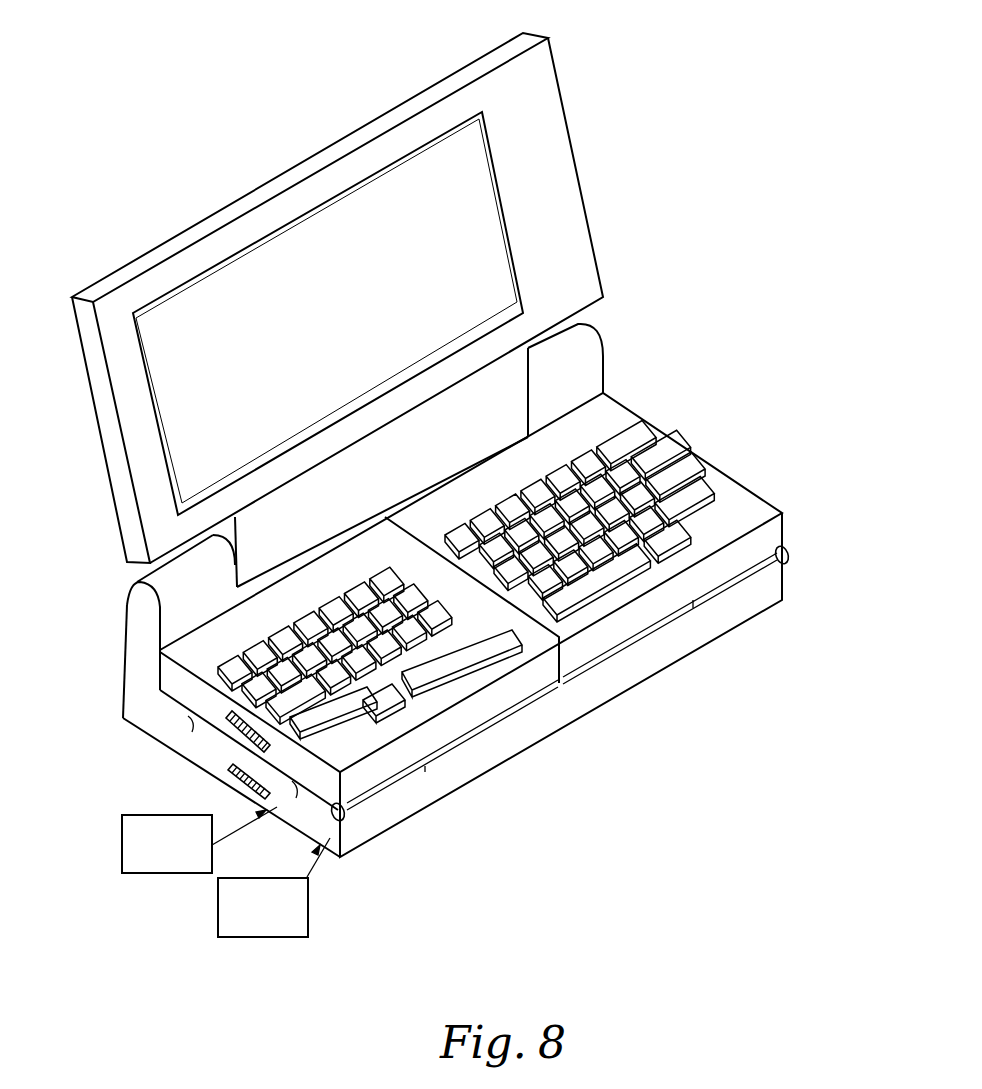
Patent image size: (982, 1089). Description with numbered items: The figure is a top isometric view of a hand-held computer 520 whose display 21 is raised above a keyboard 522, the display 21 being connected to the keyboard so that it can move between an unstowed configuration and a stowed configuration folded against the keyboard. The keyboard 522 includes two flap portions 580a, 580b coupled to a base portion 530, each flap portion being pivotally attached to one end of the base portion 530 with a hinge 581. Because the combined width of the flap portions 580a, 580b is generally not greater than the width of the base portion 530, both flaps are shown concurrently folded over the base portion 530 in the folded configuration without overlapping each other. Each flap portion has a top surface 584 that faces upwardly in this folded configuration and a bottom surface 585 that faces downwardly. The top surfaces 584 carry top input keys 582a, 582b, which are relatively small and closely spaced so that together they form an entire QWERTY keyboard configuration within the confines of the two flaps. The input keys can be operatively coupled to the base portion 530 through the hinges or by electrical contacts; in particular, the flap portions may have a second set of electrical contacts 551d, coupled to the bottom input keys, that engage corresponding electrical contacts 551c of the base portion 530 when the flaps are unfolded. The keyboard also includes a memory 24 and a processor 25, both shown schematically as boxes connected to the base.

The display 21 is at (563, 100).
The hand-held computer 520 is at (696, 285).
The keyboard 522 is at (815, 430).
The top input keys 582a is at (650, 426).
The top input keys 582b is at (437, 680).
The top surface 584 is at (716, 513).
The hinge 581 is at (788, 557).
The flap portion 580a is at (730, 563).
The flap portion 580b is at (495, 702).
The bottom surface 585 is at (693, 606).
The base portion 530 is at (658, 648).
The electrical contacts 551c is at (220, 776).
The electrical contacts 551d is at (188, 724).
The memory 24 is at (168, 876).
The processor 25 is at (268, 938).